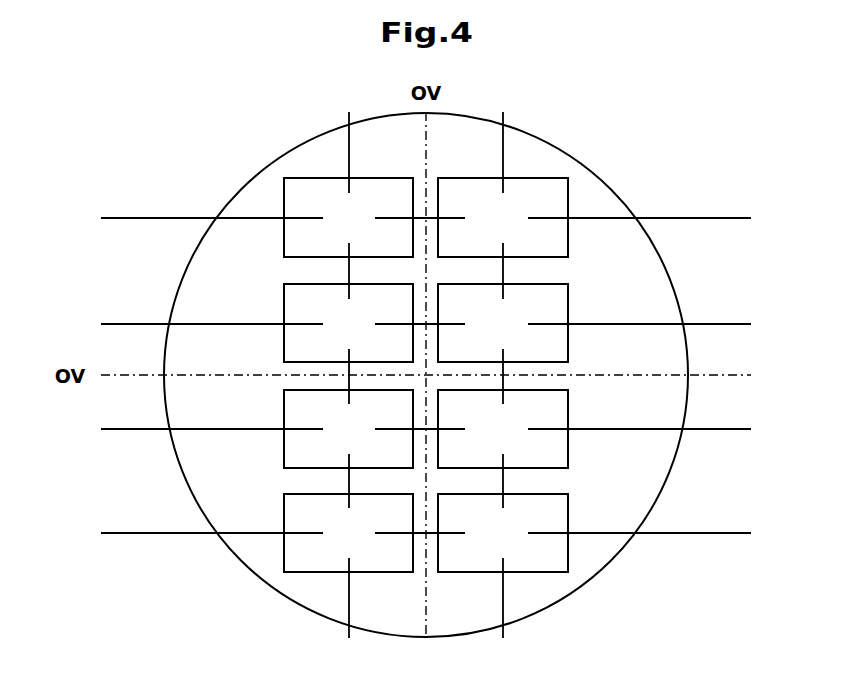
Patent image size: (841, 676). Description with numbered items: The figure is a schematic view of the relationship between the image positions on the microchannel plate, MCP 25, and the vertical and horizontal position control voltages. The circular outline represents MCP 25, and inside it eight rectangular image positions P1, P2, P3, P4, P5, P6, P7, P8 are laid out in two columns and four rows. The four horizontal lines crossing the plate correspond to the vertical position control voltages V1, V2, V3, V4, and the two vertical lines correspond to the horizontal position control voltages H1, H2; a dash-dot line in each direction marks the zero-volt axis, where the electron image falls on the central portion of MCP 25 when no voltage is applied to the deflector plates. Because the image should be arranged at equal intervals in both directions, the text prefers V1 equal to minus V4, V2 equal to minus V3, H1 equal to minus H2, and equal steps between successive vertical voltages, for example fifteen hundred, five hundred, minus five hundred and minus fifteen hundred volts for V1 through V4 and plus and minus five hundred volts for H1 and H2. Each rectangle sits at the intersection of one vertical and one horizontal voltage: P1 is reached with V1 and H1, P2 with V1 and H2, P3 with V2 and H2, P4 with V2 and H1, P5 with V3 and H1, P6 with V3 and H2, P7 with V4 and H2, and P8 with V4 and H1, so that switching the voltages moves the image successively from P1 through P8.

The microchannel plate (MCP) 25 is at (276, 601).
The image position P1 is at (348, 217).
The image position P2 is at (503, 217).
The image position P3 is at (503, 323).
The image position P4 is at (348, 323).
The image position P5 is at (348, 429).
The image position P6 is at (503, 429).
The image position P7 is at (503, 533).
The image position P8 is at (348, 533).
The horizontal position control voltage H1 is at (347, 360).
The horizontal position control voltage H2 is at (502, 360).
The vertical position control voltage V1 is at (405, 221).
The vertical position control voltage V2 is at (405, 327).
The vertical position control voltage V3 is at (405, 432).
The vertical position control voltage V4 is at (405, 536).